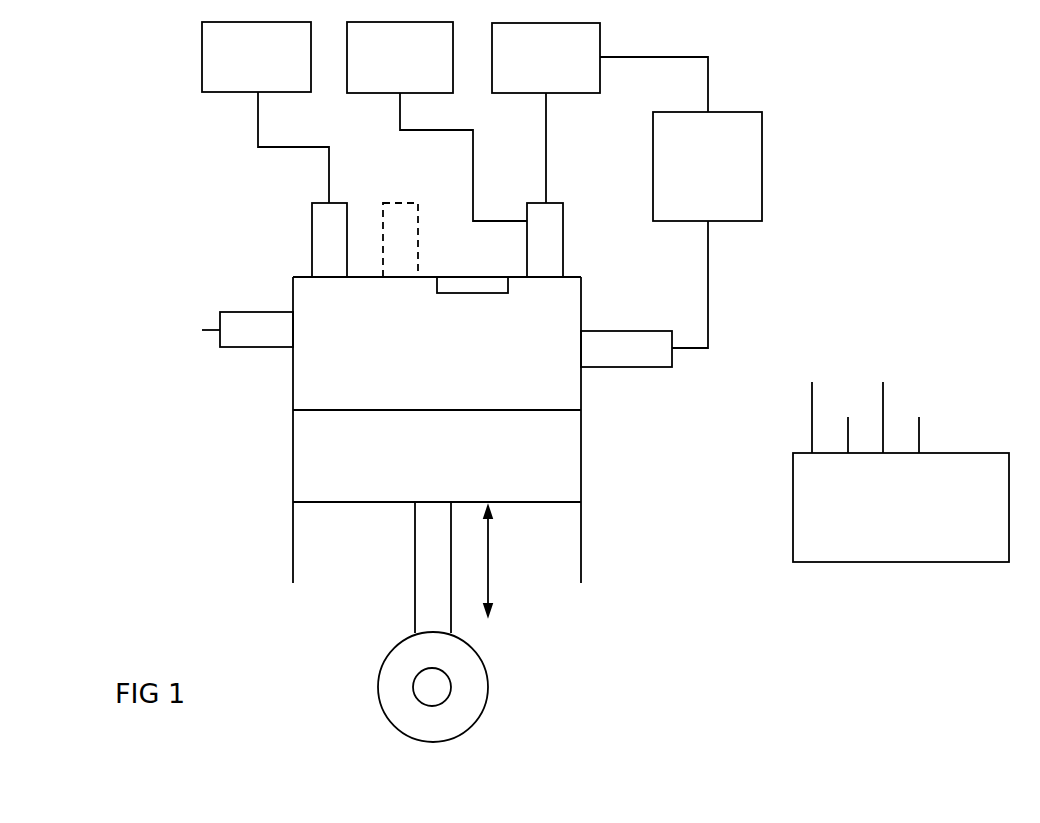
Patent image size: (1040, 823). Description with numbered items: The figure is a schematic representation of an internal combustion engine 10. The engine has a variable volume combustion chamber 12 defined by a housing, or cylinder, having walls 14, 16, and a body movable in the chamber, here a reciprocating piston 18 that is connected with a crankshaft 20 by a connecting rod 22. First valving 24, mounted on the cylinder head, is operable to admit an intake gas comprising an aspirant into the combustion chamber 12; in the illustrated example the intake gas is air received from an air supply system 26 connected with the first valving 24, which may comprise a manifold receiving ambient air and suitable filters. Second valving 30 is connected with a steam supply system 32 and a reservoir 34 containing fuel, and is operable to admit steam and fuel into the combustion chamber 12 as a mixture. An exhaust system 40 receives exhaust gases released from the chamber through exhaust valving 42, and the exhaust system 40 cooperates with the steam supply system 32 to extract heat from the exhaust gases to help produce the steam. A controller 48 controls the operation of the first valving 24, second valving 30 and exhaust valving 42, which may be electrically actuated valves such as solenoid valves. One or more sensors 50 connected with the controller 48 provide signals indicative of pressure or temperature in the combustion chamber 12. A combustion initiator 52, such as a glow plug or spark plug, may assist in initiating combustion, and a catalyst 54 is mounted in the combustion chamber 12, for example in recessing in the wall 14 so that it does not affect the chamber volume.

The internal combustion engine 10 is at (147, 238).
The variable volume combustion chamber 12 is at (437, 382).
The wall 14 is at (293, 277).
The wall 16 is at (581, 557).
The reciprocating piston 18 is at (310, 463).
The crankshaft 20 is at (433, 698).
The connecting rod 22 is at (435, 592).
The first valving 24 is at (312, 203).
The air supply system 26 is at (256, 57).
The second valving 30 is at (563, 243).
The steam supply system 32 is at (600, 113).
The reservoir 34 is at (437, 121).
The exhaust system 40 is at (707, 230).
The exhaust valving 42 is at (634, 368).
The controller 48 is at (901, 472).
The sensor 50 is at (257, 348).
The combustion initiator 52 is at (402, 203).
The catalyst 54 is at (473, 293).